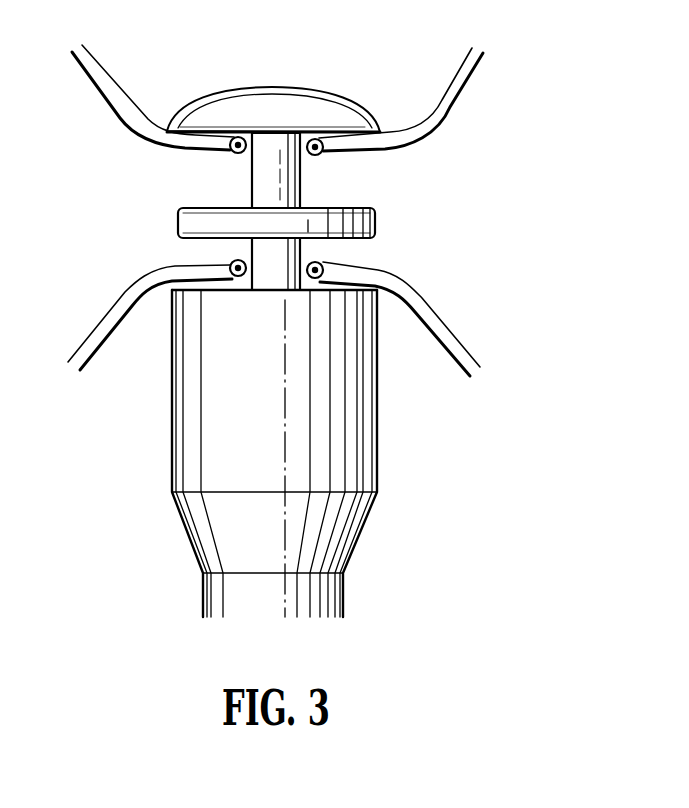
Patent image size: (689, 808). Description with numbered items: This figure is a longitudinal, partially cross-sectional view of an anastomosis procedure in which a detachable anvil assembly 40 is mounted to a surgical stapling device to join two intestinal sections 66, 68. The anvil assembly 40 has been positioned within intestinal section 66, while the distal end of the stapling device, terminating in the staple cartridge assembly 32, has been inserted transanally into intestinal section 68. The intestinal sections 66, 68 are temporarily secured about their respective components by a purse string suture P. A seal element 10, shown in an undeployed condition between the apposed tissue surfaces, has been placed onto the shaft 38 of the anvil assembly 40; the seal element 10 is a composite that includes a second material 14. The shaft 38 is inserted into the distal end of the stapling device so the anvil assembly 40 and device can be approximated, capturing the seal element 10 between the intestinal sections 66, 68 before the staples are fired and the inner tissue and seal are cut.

The seal element 10 is at (297, 326).
The second material 14 is at (377, 222).
The staple cartridge assembly 32 is at (377, 464).
The shaft 38 is at (307, 178).
The anvil assembly 40 is at (347, 92).
The intestinal section 66 is at (460, 97).
The intestinal section 68 is at (413, 289).
The purse string suture P is at (236, 142).